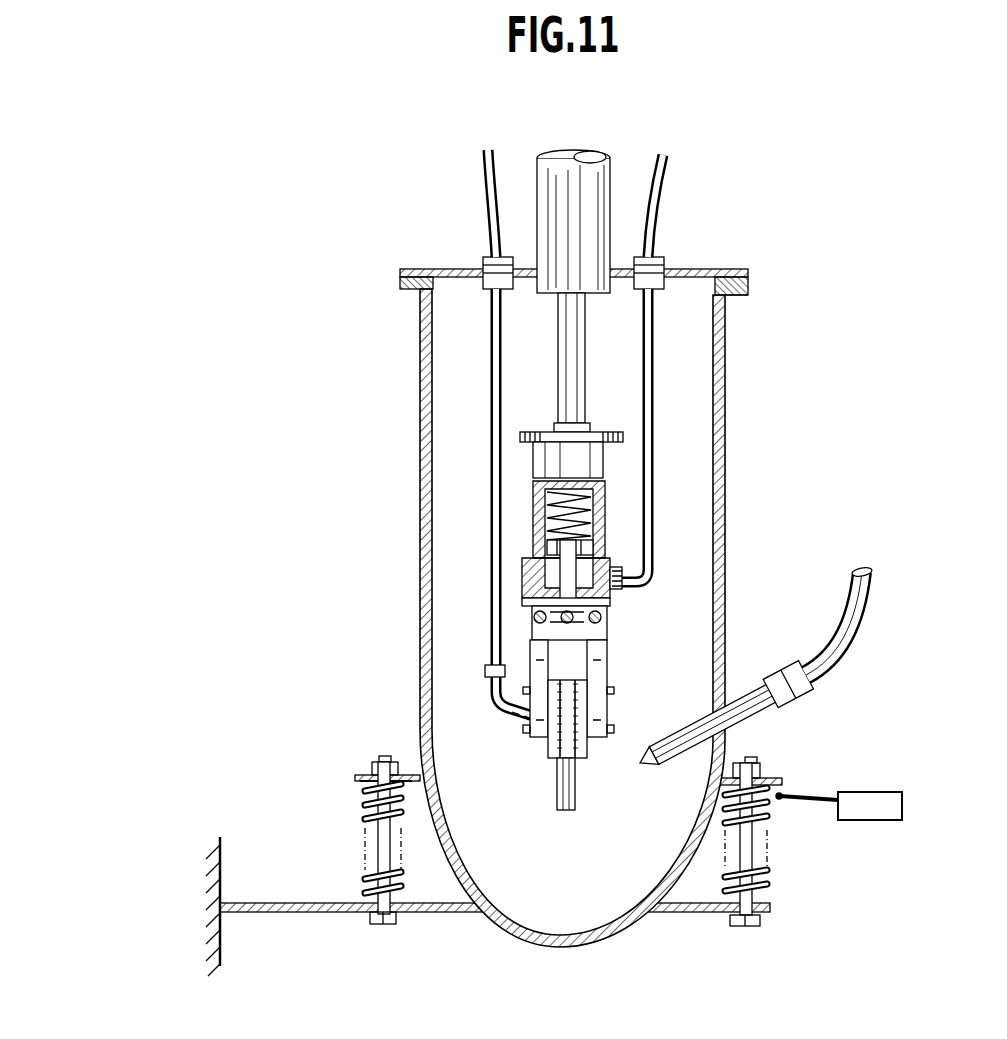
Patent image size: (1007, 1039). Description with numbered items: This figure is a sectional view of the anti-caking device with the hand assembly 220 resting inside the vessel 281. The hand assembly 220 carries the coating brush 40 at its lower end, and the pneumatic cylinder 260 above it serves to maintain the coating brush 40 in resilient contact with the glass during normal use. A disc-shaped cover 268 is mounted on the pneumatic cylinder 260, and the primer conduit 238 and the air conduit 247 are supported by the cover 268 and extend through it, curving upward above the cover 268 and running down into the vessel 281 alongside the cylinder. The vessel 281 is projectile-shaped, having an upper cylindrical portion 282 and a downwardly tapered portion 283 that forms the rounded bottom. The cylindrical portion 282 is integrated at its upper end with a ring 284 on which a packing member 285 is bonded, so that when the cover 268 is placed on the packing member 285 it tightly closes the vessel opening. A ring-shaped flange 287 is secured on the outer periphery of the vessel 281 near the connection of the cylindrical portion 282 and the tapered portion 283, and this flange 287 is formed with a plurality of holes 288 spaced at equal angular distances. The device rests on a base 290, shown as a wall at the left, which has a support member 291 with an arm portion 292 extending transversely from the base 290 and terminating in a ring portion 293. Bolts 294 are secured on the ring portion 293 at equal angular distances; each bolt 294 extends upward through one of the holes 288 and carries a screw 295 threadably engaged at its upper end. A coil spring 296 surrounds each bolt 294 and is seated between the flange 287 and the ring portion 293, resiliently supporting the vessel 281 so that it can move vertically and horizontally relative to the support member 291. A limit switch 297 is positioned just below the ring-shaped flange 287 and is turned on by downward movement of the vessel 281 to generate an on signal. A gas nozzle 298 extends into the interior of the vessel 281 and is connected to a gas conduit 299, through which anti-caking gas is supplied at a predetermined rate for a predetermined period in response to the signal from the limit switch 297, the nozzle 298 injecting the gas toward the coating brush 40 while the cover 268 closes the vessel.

The coating brush 40 is at (575, 797).
The hand assembly 220 is at (510, 475).
The primer conduit 238 is at (495, 402).
The air conduit 247 is at (653, 402).
The pneumatic cylinder 260 is at (609, 182).
The disc-shaped cover 268 is at (701, 271).
The projectile-shaped vessel 281 is at (609, 594).
The cylindrical portion 282 is at (420, 463).
The downwardly tapered portion 283 is at (470, 896).
The ring 284 is at (740, 296).
The packing member 285 is at (750, 283).
The ring-shaped flange 287 is at (410, 774).
The holes 288 is at (372, 772).
The base 290 is at (222, 862).
The support member 291 is at (501, 860).
The arm portion 292 is at (286, 913).
The ring portion 293 is at (402, 913).
The bolts 294 is at (358, 867).
The screw 295 is at (372, 762).
The coil spring 296 is at (368, 800).
The limit switch 297 is at (855, 797).
The gas nozzle 298 is at (750, 700).
The gas conduit 299 is at (830, 668).